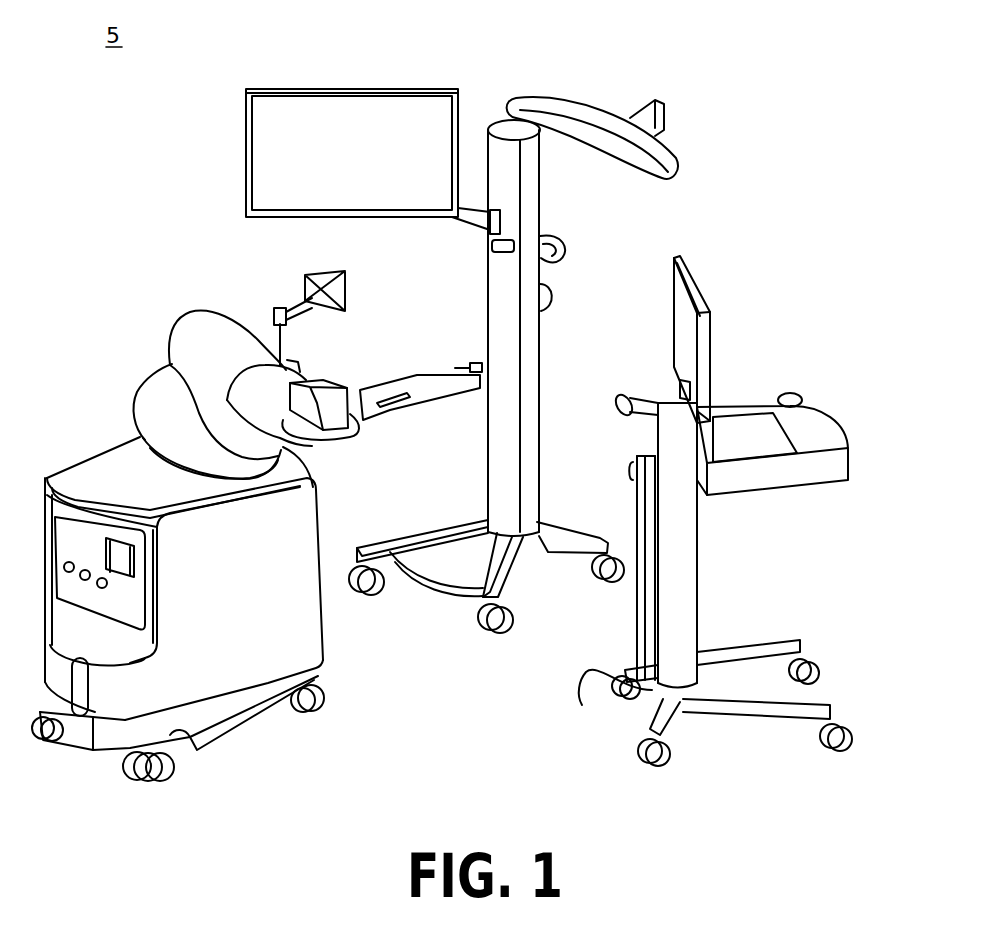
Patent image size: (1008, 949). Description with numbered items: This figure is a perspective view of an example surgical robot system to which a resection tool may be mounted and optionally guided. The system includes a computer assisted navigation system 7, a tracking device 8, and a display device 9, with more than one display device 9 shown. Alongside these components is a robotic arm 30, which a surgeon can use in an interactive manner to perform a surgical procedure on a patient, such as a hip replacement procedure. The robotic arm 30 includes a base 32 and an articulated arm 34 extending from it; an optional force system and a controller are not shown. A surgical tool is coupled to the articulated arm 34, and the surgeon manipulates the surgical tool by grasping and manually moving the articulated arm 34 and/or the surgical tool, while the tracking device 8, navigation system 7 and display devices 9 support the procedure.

The computer assisted navigation system 7 is at (845, 422).
The tracking device 8 is at (574, 100).
The display device 9 is at (357, 90).
The robotic arm 30 is at (90, 458).
The base 32 is at (330, 495).
The articulated arm 34 is at (415, 372).